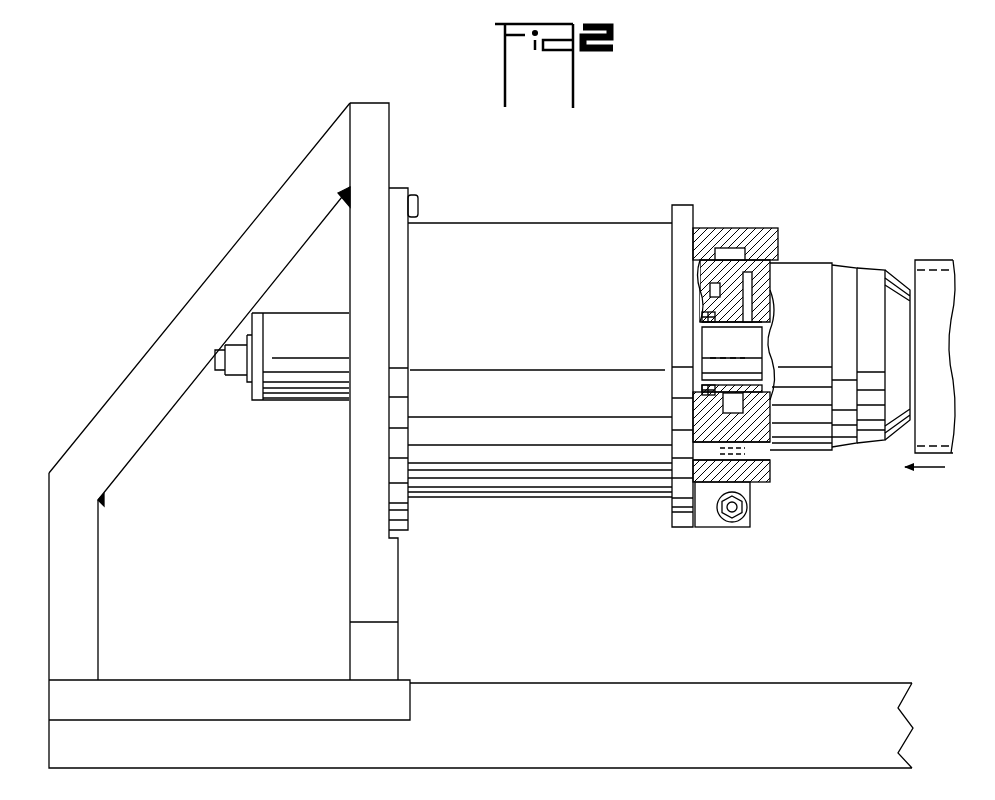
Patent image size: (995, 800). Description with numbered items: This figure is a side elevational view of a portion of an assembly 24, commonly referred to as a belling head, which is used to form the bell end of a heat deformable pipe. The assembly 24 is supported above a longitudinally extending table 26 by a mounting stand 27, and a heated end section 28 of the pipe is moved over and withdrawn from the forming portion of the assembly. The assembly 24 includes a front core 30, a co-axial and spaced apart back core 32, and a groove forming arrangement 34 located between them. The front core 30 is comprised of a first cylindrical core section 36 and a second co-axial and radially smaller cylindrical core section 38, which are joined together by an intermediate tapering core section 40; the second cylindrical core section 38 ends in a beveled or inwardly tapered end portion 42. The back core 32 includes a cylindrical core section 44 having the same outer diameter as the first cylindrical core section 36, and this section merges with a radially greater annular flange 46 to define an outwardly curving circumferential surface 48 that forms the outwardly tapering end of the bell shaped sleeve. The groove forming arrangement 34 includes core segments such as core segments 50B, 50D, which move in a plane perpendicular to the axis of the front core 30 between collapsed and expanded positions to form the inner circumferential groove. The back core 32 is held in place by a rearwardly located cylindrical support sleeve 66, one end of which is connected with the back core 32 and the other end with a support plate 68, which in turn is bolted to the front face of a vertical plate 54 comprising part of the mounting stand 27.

The assembly 24 is at (800, 138).
The table 26 is at (700, 692).
The mounting stand 27 is at (292, 188).
The end section 28 is at (932, 262).
The front core 30 is at (867, 336).
The back core 32 is at (708, 240).
The groove forming arrangement 34 is at (812, 208).
The first cylindrical core section 36 is at (802, 268).
The second cylindrical core section 38 is at (872, 448).
The intermediate tapering core section 40 is at (844, 448).
The beveled end portion 42 is at (898, 270).
The cylindrical core section 44 is at (700, 447).
The annular flange 46 is at (676, 514).
The outwardly curving circumferential surface 48 is at (700, 262).
The core segment 50B is at (735, 445).
The core segment 50D is at (762, 228).
The vertical plate 54 is at (378, 123).
The support sleeve 66 is at (472, 228).
The support plate 68 is at (400, 187).